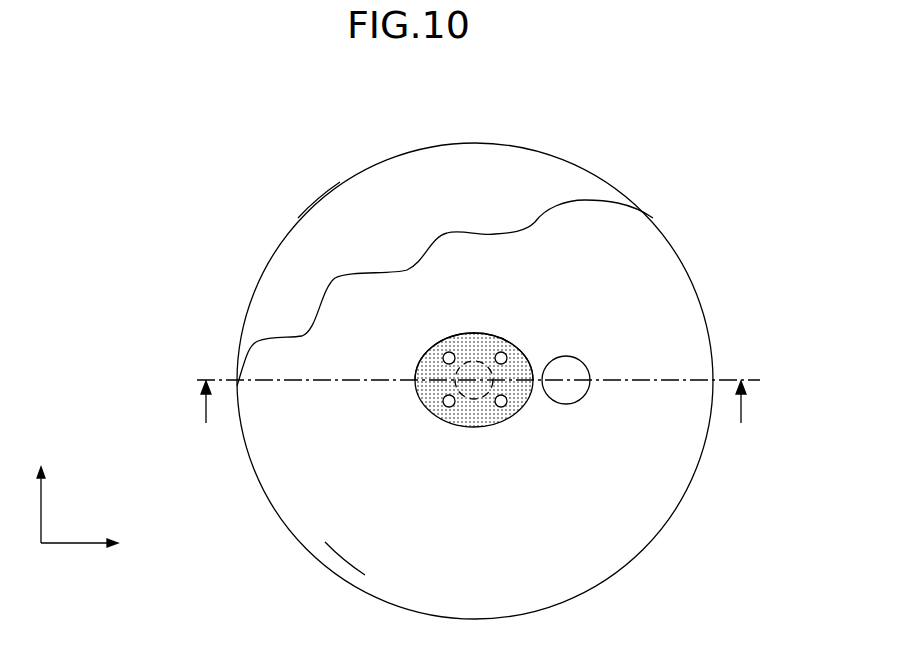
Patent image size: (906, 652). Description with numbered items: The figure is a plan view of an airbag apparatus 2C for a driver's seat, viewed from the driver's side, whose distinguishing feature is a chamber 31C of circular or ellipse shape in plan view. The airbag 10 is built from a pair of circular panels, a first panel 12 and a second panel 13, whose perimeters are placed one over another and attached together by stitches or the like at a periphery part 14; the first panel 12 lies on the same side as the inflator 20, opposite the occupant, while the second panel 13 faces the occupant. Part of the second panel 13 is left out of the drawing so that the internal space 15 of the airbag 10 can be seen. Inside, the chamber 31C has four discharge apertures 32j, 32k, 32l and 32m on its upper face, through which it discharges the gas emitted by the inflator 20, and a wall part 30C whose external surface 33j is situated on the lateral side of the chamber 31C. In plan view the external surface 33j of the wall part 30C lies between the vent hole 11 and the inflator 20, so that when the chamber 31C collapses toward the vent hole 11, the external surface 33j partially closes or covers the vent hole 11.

The airbag apparatus 2C is at (258, 123).
The airbag 10 is at (728, 128).
The vent hole 11 is at (590, 364).
The first panel 12 is at (623, 240).
The second panel 13 is at (570, 183).
The periphery part 14 is at (298, 218).
The internal space 15 is at (325, 542).
The inflator 20 is at (457, 421).
The wall part 30C is at (433, 360).
The chamber 31C is at (396, 368).
The discharge aperture 32j is at (503, 354).
The discharge aperture 32k is at (508, 406).
The discharge aperture 32l is at (444, 406).
The discharge aperture 32m is at (449, 357).
The external surface 33j is at (533, 371).